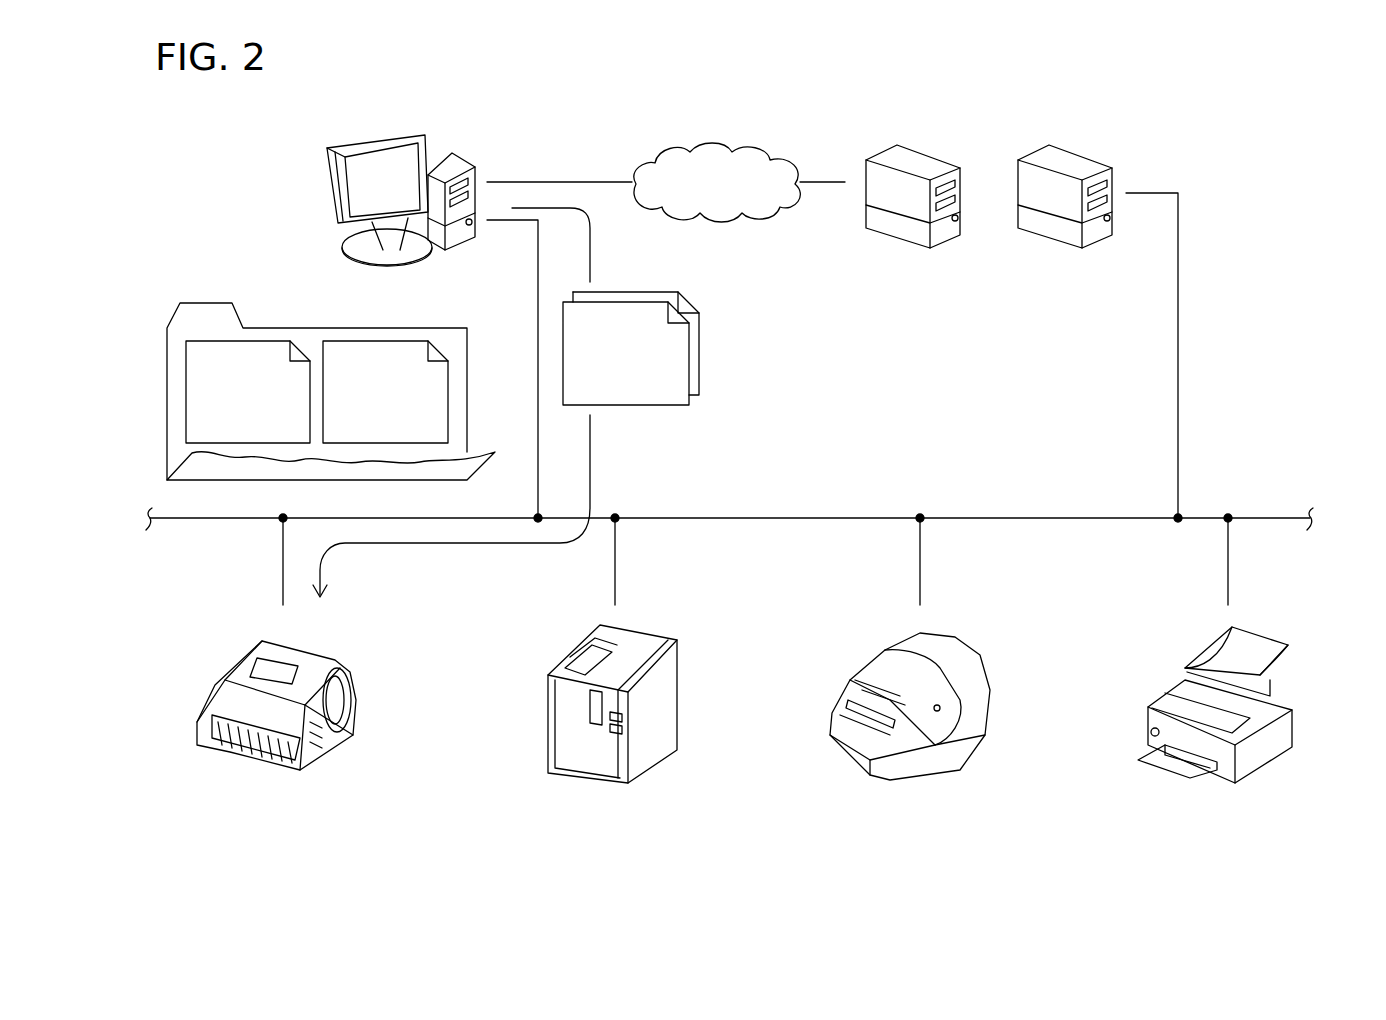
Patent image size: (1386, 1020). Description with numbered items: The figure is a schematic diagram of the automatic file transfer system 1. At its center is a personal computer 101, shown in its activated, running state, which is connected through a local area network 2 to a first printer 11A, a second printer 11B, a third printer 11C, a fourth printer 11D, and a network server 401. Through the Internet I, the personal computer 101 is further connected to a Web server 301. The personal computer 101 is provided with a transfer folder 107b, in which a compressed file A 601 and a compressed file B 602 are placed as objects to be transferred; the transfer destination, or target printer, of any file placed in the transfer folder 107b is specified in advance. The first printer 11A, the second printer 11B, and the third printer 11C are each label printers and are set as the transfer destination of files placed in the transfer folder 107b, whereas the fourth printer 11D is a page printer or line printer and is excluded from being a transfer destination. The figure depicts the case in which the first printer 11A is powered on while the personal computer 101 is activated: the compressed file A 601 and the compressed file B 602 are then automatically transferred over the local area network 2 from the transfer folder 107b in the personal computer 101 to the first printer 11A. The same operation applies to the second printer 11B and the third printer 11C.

The automatic file transfer system 1 is at (1262, 176).
The local area network (LAN) 2 is at (1263, 518).
The Internet I is at (668, 160).
The personal computer 101 is at (468, 250).
The transfer folder 107b is at (167, 360).
The Web server 301 is at (887, 228).
The network server 401 is at (1040, 228).
The compressed file A 601 is at (186, 425).
The compressed file B 602 is at (448, 425).
The first printer 11A is at (318, 755).
The second printer 11B is at (650, 752).
The third printer 11C is at (968, 768).
The fourth printer 11D is at (1275, 758).